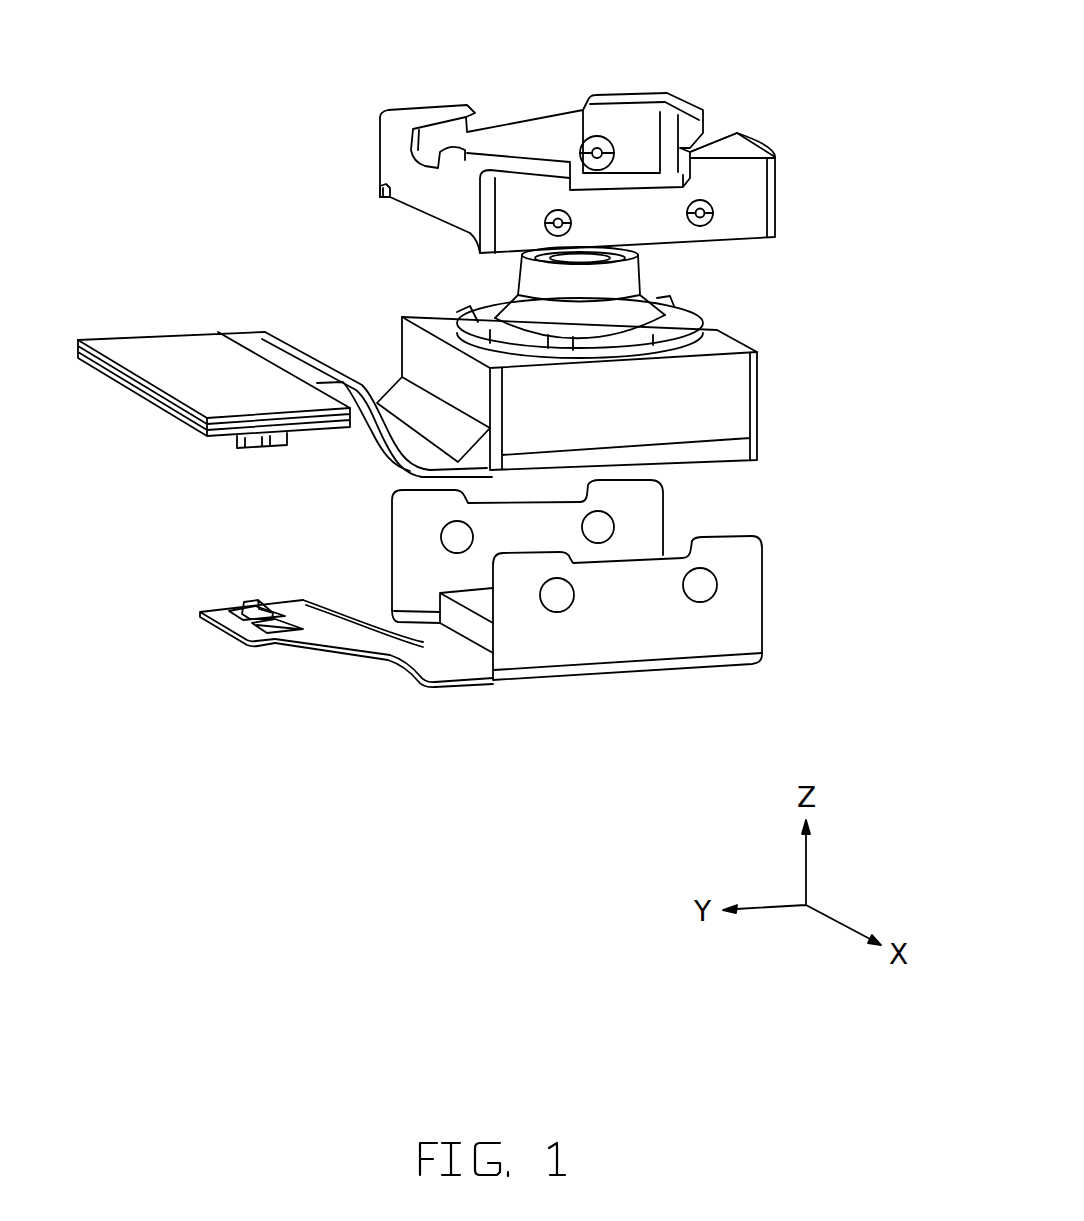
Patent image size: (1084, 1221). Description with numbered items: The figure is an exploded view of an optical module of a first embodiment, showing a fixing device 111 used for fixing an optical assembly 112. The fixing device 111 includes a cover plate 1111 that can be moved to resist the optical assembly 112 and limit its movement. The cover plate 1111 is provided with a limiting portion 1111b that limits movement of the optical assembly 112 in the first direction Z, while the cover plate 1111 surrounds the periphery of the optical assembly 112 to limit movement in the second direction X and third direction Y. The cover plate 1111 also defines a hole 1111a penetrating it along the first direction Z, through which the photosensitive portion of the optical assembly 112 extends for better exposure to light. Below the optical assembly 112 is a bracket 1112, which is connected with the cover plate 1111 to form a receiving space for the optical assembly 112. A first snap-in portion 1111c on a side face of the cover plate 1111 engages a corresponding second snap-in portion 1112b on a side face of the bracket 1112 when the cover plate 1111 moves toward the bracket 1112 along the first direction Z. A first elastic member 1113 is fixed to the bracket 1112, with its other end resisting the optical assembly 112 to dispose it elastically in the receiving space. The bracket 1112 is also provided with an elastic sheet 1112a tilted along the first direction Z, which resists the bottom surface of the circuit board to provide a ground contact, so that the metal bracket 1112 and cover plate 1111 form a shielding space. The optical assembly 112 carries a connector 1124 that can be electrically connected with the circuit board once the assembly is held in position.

The fixing device 111 is at (857, 197).
The cover plate 1111 is at (745, 207).
The hole 1111a is at (621, 133).
The limiting portion 1111b is at (725, 146).
The first snap-in portion 1111c is at (713, 203).
The optical assembly 112 is at (418, 345).
The connector 1124 is at (203, 347).
The bracket 1112 is at (743, 628).
The elastic sheet 1112a is at (253, 602).
The second snap-in portion 1112b is at (698, 590).
The first elastic member 1113 is at (482, 605).